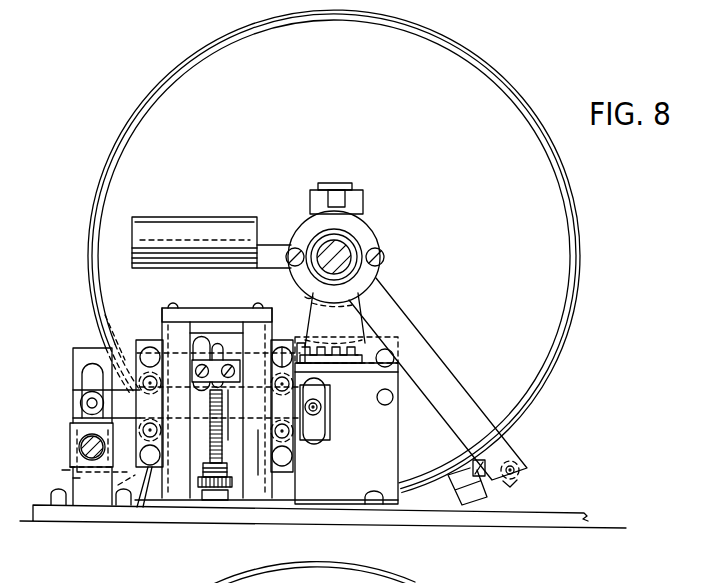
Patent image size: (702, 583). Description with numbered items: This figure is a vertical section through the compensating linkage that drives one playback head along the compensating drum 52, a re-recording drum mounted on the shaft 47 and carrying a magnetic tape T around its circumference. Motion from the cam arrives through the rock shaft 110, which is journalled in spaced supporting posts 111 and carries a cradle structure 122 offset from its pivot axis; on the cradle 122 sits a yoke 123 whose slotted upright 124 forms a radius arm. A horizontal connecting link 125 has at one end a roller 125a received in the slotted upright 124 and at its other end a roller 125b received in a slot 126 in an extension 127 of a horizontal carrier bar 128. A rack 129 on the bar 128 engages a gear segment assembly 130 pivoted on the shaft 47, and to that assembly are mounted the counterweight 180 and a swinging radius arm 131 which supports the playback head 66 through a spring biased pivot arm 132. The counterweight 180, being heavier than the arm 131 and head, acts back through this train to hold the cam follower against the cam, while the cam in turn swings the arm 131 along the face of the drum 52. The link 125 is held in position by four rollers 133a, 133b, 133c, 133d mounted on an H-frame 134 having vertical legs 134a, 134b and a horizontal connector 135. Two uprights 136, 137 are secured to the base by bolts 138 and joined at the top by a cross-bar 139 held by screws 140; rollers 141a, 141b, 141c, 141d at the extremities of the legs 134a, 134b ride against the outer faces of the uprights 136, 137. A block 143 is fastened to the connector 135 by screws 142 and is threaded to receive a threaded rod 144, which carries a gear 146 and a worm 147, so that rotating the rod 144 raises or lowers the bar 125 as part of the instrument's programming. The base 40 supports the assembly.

The base 40 is at (572, 518).
The shaft 47 is at (343, 254).
The drum 52 is at (575, 268).
The magnetic tape T is at (568, 343).
The playback head 66 is at (455, 478).
The rock shaft 110 is at (80, 445).
The supporting posts 111 is at (68, 430).
The cradle structure 122 is at (61, 479).
The yoke 123 is at (73, 478).
The slotted upright 124 is at (77, 360).
The horizontal connecting link 125 is at (117, 372).
The roller 125a is at (81, 402).
The roller 125b is at (328, 422).
The slot 126 is at (320, 398).
The extension 127 is at (330, 427).
The horizontal carrier bar 128 is at (376, 381).
The rack 129 is at (362, 358).
The gear segment assembly 130 is at (309, 298).
The swinging radius arm 131 is at (472, 410).
The spring biased pivot arm 132 is at (496, 480).
The roller 133a is at (282, 345).
The roller 133b is at (105, 315).
The roller 133c is at (133, 444).
The roller 133d is at (292, 457).
The H-frame 134 is at (72, 474).
The vertical leg 134a is at (278, 472).
The vertical leg 134b is at (150, 507).
The horizontal connector 135 is at (230, 340).
The upright 136 is at (165, 473).
The upright 137 is at (263, 473).
The bolts 138 is at (186, 478).
The cross-bar 139 is at (185, 307).
The screws 140 is at (258, 307).
The roller 141a is at (306, 327).
The roller 141b is at (152, 349).
The roller 141c is at (146, 473).
The roller 141d is at (282, 472).
The screws 142 is at (228, 358).
The block 143 is at (208, 338).
The threaded rod 144 is at (234, 440).
The gear 146 is at (205, 500).
The worm 147 is at (196, 490).
The counterweight 180 is at (196, 217).